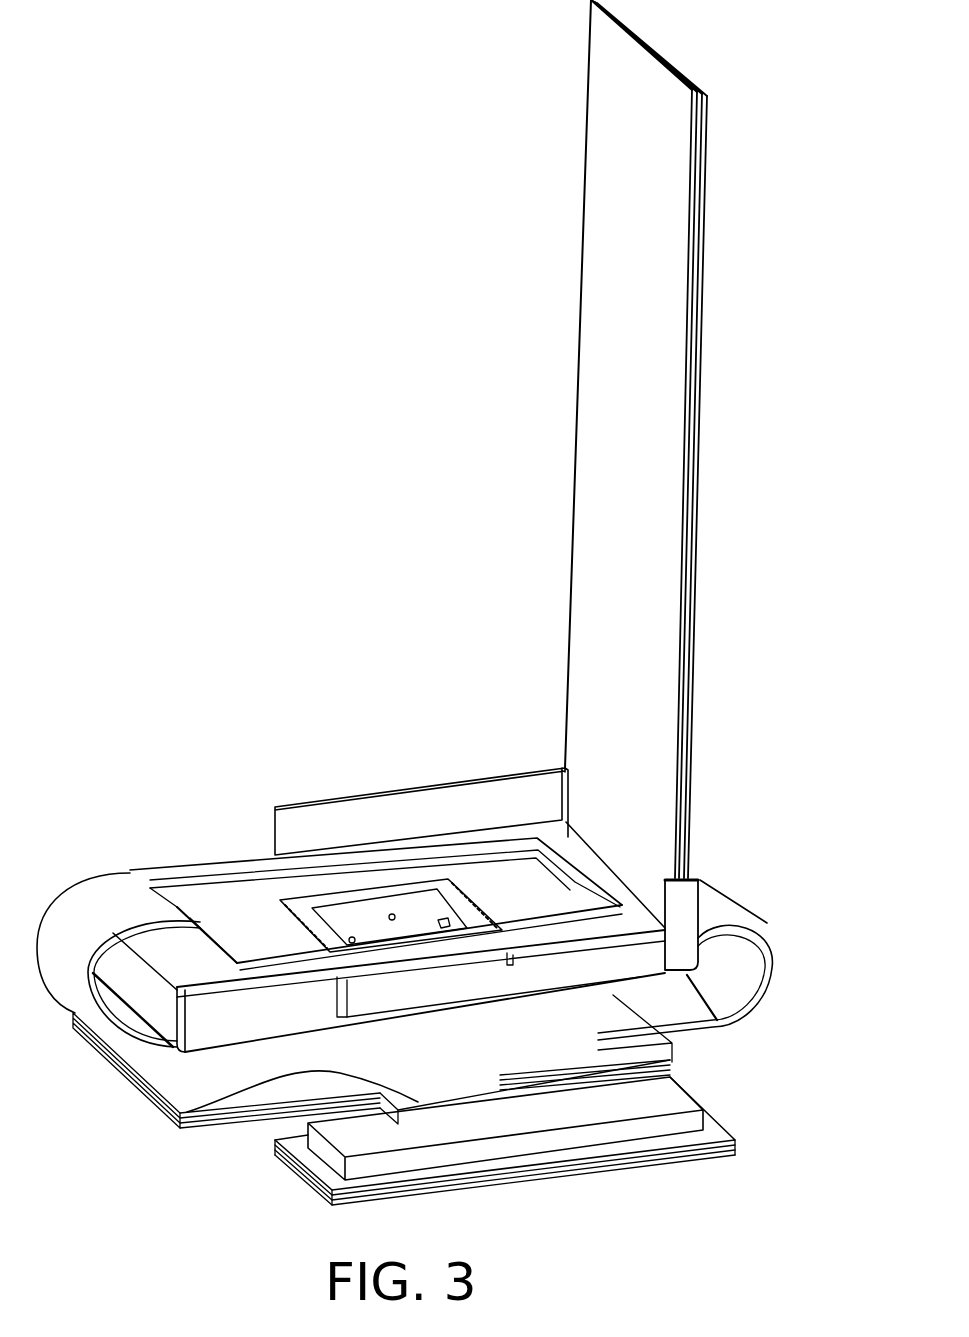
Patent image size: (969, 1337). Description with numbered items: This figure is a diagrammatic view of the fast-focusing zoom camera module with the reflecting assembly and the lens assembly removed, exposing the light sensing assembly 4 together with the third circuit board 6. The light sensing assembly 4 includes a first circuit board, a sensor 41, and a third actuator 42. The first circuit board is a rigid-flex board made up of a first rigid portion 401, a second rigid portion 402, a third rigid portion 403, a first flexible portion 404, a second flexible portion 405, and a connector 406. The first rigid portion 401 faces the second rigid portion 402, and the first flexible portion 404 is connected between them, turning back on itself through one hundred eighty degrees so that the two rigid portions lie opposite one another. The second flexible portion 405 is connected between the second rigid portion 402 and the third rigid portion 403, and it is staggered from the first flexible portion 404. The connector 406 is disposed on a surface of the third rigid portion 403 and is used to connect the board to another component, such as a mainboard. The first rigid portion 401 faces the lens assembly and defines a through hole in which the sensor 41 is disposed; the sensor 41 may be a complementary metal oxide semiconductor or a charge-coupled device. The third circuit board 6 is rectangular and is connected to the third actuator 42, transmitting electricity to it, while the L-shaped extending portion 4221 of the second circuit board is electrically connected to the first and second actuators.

The light sensing assembly 4 is at (357, 493).
The third circuit board 6 is at (724, 599).
The sensor 41 is at (362, 915).
The third actuator 42 is at (140, 1013).
The first rigid portion 401 is at (247, 928).
The second rigid portion 402 is at (643, 1045).
The third rigid portion 403 is at (716, 1138).
The first flexible portion 404 is at (757, 949).
The second flexible portion 405 is at (247, 1097).
The connector 406 is at (357, 1145).
The extending portion 4221 is at (688, 897).